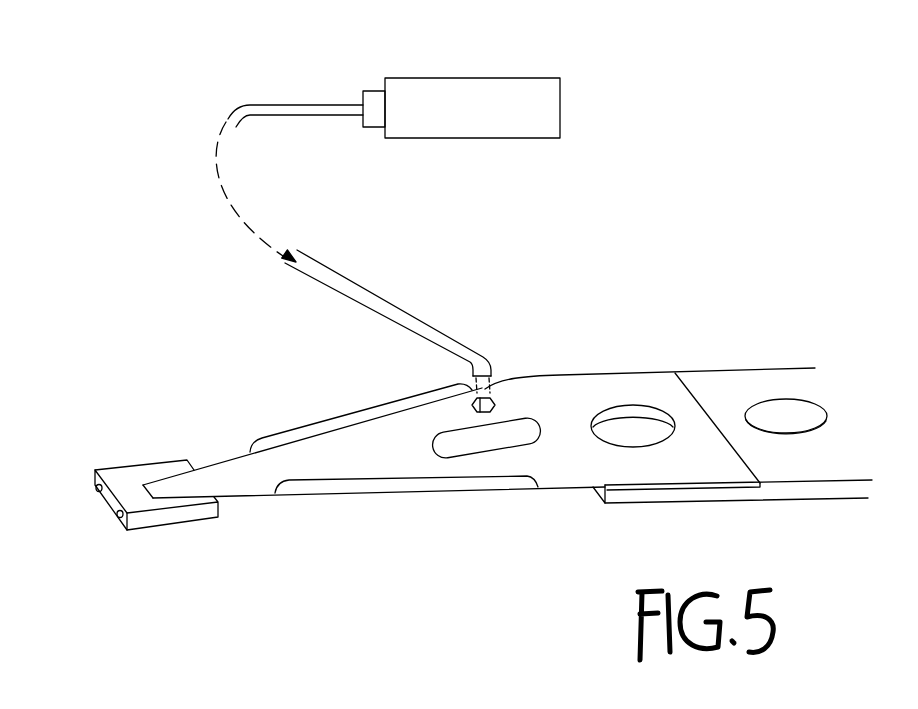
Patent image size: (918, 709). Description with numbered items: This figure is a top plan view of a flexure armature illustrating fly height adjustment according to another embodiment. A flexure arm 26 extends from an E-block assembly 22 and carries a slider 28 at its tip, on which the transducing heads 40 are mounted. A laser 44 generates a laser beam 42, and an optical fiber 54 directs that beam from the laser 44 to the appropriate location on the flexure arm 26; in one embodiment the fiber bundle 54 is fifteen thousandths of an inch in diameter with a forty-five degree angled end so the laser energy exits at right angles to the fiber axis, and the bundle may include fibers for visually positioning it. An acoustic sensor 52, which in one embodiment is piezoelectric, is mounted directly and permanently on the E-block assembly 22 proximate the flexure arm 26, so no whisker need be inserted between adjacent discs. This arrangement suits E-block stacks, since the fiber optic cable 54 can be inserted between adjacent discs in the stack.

The E-block assembly 22 is at (683, 503).
The flexure arm 26 is at (397, 486).
The slider 28 is at (173, 527).
The transducing heads 40 is at (117, 514).
The laser beam 42 is at (490, 389).
The laser 44 is at (493, 78).
The acoustic sensor 52 is at (783, 418).
The optical fiber 54 is at (366, 279).